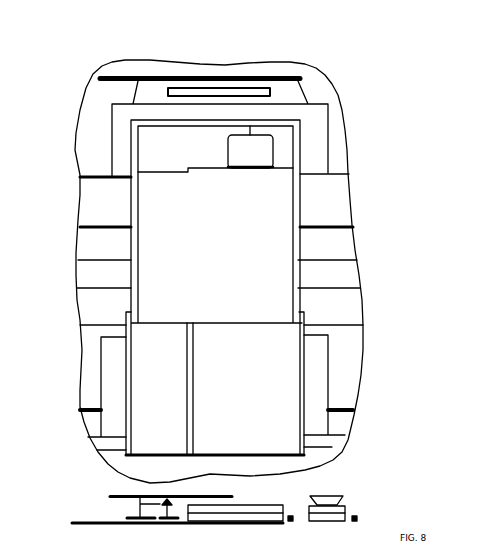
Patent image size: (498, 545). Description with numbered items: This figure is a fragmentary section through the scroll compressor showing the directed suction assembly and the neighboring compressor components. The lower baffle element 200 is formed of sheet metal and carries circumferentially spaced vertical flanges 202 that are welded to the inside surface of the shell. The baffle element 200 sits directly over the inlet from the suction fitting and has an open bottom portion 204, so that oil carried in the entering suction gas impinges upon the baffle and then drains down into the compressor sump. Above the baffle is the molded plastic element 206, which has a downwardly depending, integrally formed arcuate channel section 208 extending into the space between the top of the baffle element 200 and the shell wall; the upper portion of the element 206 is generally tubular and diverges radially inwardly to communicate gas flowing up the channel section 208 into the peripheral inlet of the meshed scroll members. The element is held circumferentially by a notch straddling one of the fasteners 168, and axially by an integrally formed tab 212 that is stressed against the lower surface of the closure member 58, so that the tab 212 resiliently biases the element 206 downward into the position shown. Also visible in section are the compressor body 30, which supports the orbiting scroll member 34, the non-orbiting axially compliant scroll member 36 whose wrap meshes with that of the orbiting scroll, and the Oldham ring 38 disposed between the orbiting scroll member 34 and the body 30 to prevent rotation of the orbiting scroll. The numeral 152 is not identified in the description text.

The closure member 58 is at (163, 68).
The non-orbiting axially compliant scroll member 36 is at (92, 108).
The housing wall portion 152 is at (95, 178).
The tab 212 is at (293, 88).
The molded plastic element 206 is at (317, 150).
The arcuate shaped channel section 208 is at (146, 199).
The fastener 168 is at (247, 157).
The orbiting scroll member 34 is at (340, 242).
The Oldham ring 38 is at (348, 273).
The compressor body 30 is at (350, 305).
The vertical flanges 202 is at (108, 357).
The lower baffle element 200 is at (266, 392).
The open bottom portion 204 is at (140, 461).